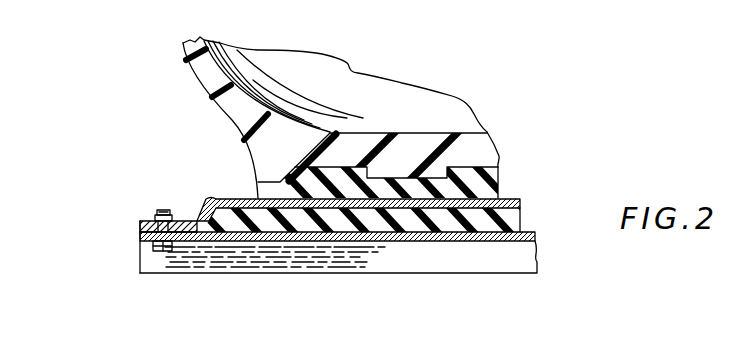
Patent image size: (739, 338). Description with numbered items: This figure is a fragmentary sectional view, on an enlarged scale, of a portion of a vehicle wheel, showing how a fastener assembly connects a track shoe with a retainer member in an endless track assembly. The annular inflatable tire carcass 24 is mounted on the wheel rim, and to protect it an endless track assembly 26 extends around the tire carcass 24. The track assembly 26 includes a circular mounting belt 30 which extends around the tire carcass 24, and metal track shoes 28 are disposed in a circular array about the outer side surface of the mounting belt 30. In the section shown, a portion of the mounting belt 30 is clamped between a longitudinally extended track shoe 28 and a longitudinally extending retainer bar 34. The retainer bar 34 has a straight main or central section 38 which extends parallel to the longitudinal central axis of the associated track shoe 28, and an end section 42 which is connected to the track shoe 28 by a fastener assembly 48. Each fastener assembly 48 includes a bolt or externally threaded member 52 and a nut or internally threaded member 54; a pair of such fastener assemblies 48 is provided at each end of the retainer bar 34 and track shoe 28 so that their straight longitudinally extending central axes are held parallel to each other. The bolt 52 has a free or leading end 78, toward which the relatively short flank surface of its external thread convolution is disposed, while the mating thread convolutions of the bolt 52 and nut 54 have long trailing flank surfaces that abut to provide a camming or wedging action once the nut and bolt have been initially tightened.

The tire carcass 24 is at (204, 74).
The endless track assembly 26 is at (118, 244).
The track shoe 28 is at (372, 255).
The mounting belt 30 is at (474, 185).
The retainer bar 34 is at (233, 188).
The main or central section 38 is at (498, 213).
The end section 42 is at (140, 232).
The fastener assembly 48 is at (149, 203).
The bolt or externally threaded member 52 is at (153, 252).
The nut or internally threaded member 54 is at (169, 210).
The free or leading end of the bolt 78 is at (160, 210).